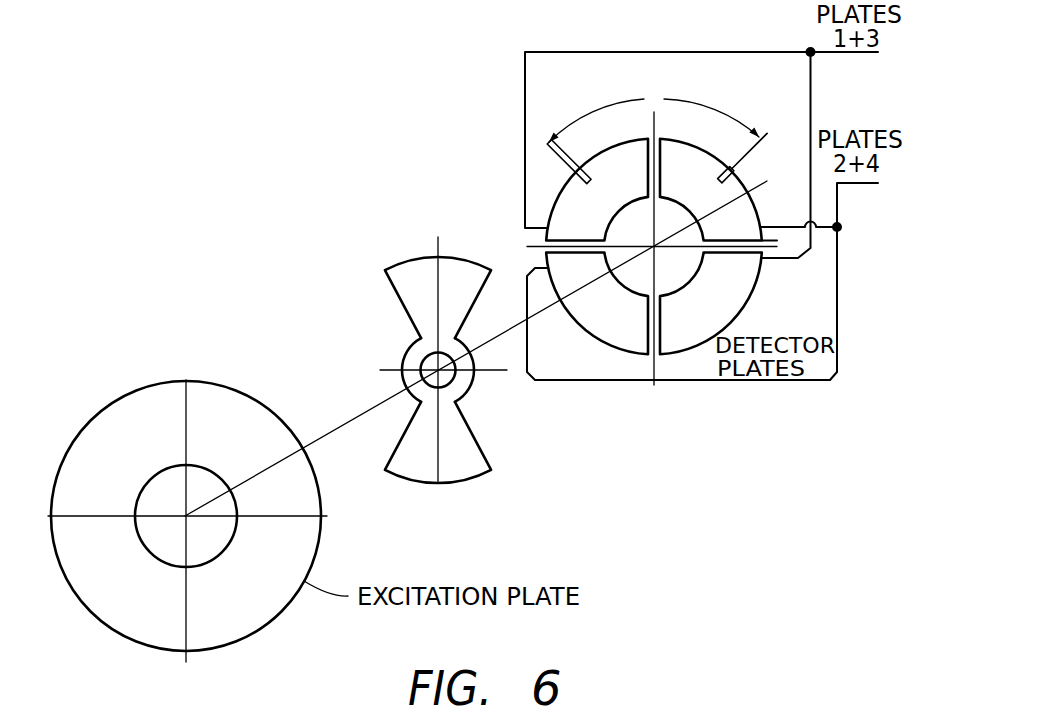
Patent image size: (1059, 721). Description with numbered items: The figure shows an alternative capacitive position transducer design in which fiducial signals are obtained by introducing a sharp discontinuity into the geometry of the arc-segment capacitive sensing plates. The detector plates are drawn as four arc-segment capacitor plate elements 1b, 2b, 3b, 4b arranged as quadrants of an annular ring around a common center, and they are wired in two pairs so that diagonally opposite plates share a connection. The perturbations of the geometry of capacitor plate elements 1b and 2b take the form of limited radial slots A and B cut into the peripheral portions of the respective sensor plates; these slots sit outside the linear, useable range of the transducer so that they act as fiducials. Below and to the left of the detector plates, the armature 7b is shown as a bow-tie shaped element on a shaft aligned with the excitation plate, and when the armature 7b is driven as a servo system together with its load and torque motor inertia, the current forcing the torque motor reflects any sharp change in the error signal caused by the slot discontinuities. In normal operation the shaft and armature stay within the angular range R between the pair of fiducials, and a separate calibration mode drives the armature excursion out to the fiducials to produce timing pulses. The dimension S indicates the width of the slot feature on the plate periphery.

The capacitor plate element 1b is at (609, 208).
The capacitor plate element 2b is at (715, 203).
The third detector plate 3b is at (727, 315).
The fourth detector plate 4b is at (625, 321).
The armature 7b is at (491, 470).
The radial slot A is at (577, 166).
The radial slot B is at (731, 167).
The angular range R is at (654, 114).
The gap S is at (553, 150).